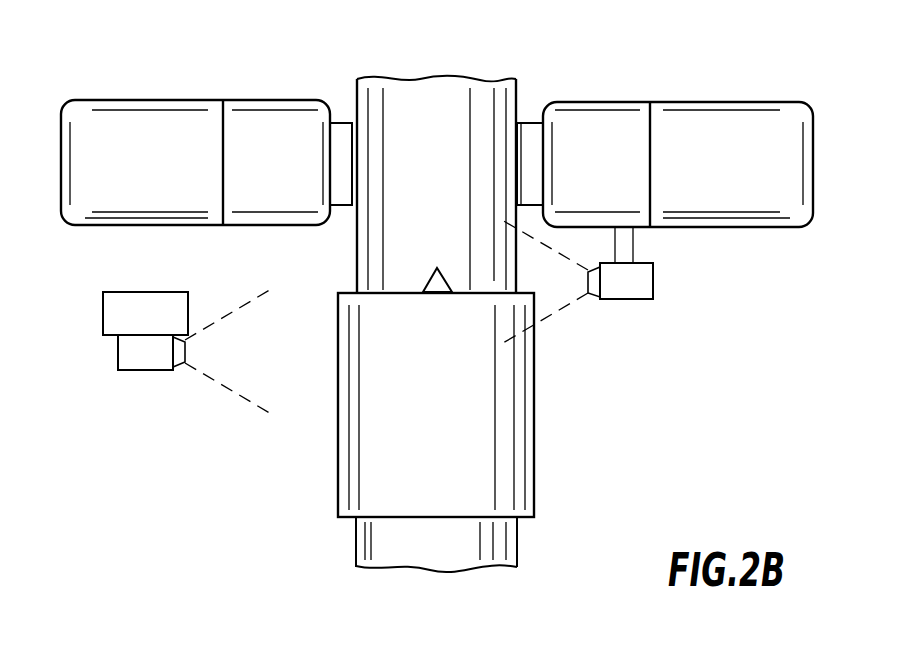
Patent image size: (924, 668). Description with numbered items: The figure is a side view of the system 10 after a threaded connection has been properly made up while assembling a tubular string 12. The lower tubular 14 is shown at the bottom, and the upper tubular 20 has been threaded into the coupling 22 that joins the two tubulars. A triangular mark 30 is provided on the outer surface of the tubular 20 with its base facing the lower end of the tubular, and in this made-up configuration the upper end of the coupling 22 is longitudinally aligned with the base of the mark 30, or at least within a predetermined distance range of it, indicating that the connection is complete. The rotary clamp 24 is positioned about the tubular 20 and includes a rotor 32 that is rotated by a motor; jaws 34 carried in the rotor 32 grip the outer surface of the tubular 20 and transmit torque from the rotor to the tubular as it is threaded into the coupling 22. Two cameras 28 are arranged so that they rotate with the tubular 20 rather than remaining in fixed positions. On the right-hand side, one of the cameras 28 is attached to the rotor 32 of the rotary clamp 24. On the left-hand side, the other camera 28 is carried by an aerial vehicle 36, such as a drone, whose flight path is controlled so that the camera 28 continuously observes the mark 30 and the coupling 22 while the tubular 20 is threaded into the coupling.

The system 10 is at (822, 68).
The tubular string 12 is at (541, 443).
The tubular 14 is at (356, 537).
The tubular 20 is at (518, 87).
The coupling 22 is at (338, 454).
The rotary clamp 24 is at (100, 100).
The cameras 28 is at (130, 370).
The mark 30 is at (425, 282).
The rotor 32 is at (287, 100).
The jaws 34 is at (342, 123).
The aerial vehicle 36 is at (103, 308).